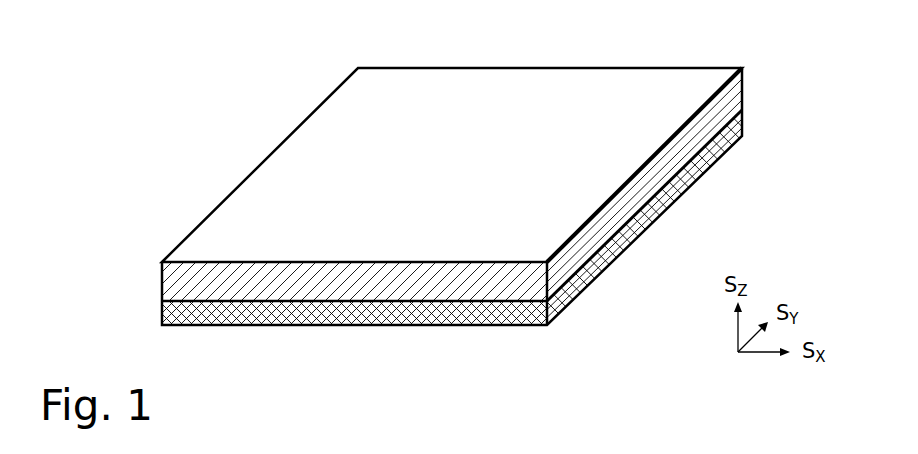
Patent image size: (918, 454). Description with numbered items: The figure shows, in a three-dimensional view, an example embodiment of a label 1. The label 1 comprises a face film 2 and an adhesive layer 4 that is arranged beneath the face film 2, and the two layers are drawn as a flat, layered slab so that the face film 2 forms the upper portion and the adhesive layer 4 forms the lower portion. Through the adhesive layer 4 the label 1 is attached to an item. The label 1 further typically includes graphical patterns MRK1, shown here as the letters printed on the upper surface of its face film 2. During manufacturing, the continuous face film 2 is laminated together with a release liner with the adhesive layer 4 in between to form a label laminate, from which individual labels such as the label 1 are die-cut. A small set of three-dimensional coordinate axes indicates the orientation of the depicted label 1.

The label 1 is at (512, 46).
The face film 2 is at (161, 279).
The adhesive layer 4 is at (161, 308).
The graphics MRK1 is at (347, 158).